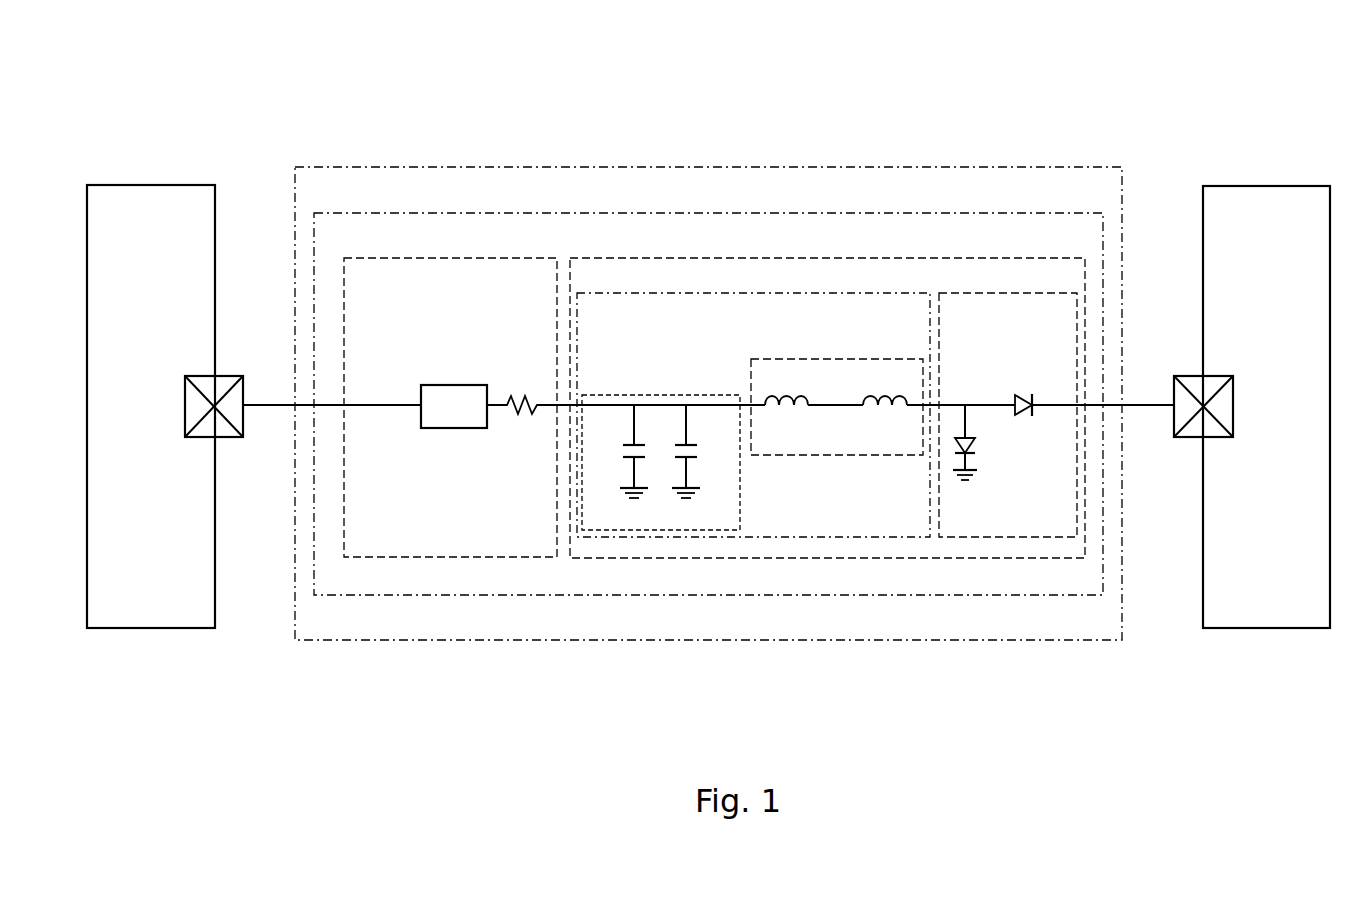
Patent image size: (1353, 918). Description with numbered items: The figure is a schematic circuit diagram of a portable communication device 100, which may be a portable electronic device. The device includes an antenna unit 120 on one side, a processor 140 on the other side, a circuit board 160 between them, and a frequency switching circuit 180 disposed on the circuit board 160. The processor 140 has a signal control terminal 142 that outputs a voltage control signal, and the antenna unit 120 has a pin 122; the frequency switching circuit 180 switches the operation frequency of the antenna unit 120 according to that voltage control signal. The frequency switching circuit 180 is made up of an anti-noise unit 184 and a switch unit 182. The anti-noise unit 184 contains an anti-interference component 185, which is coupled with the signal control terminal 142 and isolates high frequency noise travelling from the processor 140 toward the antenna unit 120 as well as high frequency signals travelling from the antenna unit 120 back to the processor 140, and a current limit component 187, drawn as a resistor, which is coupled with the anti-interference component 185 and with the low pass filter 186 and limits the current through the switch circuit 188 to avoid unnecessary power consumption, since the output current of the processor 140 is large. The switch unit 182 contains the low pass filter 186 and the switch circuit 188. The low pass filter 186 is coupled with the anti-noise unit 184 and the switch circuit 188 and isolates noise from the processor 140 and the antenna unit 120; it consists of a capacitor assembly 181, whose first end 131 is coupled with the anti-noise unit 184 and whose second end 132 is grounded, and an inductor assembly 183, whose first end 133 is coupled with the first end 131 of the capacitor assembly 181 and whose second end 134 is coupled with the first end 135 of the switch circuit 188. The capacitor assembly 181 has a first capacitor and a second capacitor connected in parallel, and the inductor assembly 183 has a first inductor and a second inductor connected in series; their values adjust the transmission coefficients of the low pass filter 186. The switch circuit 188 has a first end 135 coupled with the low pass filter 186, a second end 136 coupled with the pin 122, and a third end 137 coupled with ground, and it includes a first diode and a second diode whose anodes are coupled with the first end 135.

The portable communication device 100 is at (244, 63).
The antenna unit 120 is at (1248, 618).
The pin 122 is at (1218, 376).
The first end of the capacitor assembly 131 is at (659, 405).
The second end of the capacitor assembly 132 is at (684, 500).
The first end of the inductor assembly 133 is at (757, 405).
The second end of the inductor assembly 134 is at (911, 405).
The first end of the switch circuit 135 is at (953, 405).
The second end of the switch circuit 136 is at (1055, 405).
The third end of the switch circuit 137 is at (978, 477).
The processor 140 is at (208, 618).
The signal control terminal 142 is at (197, 376).
The circuit board 160 is at (1114, 198).
The frequency switching circuit 180 is at (1094, 245).
The capacitor assembly 181 is at (734, 527).
The switch unit 182 is at (1071, 283).
The inductor assembly 183 is at (857, 445).
The anti-noise unit 184 is at (548, 547).
The anti-interference component 185 is at (450, 385).
The low pass filter 186 is at (925, 525).
The current limit component 187 is at (517, 397).
The switch circuit 188 is at (1071, 523).